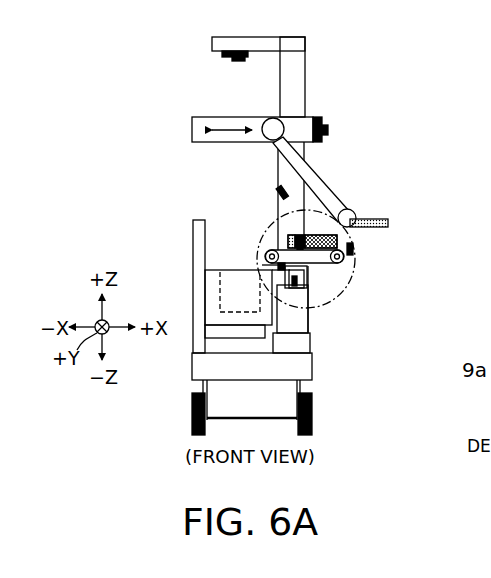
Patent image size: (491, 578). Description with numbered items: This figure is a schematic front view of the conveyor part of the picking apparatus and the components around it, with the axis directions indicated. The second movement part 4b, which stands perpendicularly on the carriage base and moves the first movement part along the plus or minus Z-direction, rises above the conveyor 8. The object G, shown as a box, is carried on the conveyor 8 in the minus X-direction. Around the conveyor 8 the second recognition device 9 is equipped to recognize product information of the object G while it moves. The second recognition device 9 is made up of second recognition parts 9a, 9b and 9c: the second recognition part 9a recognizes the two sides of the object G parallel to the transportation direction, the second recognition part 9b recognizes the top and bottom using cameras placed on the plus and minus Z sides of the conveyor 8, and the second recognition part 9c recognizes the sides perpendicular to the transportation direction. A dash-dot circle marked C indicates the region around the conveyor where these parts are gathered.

The second movement part 4b is at (292, 108).
The object G is at (352, 212).
The second recognition part 9b is at (280, 189).
The rotation center C is at (273, 222).
The conveyor 8 is at (338, 257).
The second recognition part 9a is at (306, 264).
The second recognition part 9c is at (258, 258).
The second recognition device 9 is at (358, 340).